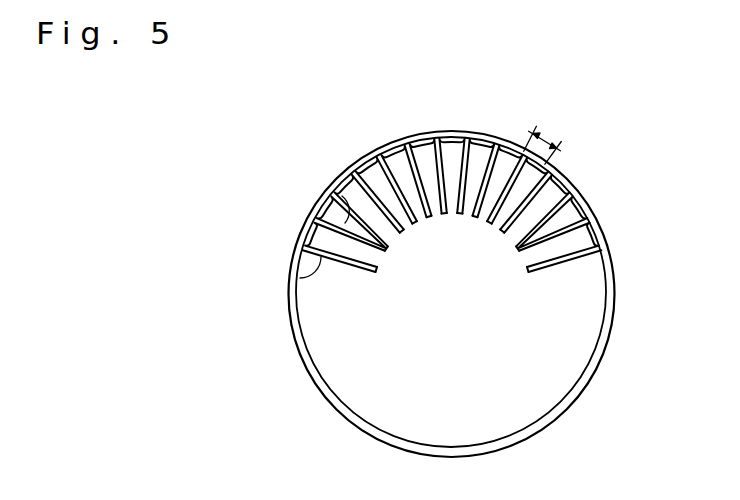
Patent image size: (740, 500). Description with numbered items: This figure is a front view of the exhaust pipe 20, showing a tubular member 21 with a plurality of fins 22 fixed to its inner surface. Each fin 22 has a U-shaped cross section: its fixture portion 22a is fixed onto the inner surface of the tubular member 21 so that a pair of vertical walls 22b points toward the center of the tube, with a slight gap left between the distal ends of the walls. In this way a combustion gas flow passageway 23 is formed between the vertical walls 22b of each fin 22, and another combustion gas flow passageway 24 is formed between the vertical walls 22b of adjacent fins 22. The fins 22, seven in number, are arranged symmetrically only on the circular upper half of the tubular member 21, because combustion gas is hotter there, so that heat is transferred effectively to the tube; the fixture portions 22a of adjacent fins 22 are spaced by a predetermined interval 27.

The stator core 20 is at (448, 269).
The tubular member 21 is at (608, 342).
The fin 22 is at (413, 212).
The fixture portion 22a is at (316, 227).
The vertical walls 22b is at (343, 197).
The combustion gas flow passageway 23 is at (449, 157).
The combustion gas flow passageway 24 is at (477, 153).
The interval 27 is at (547, 139).